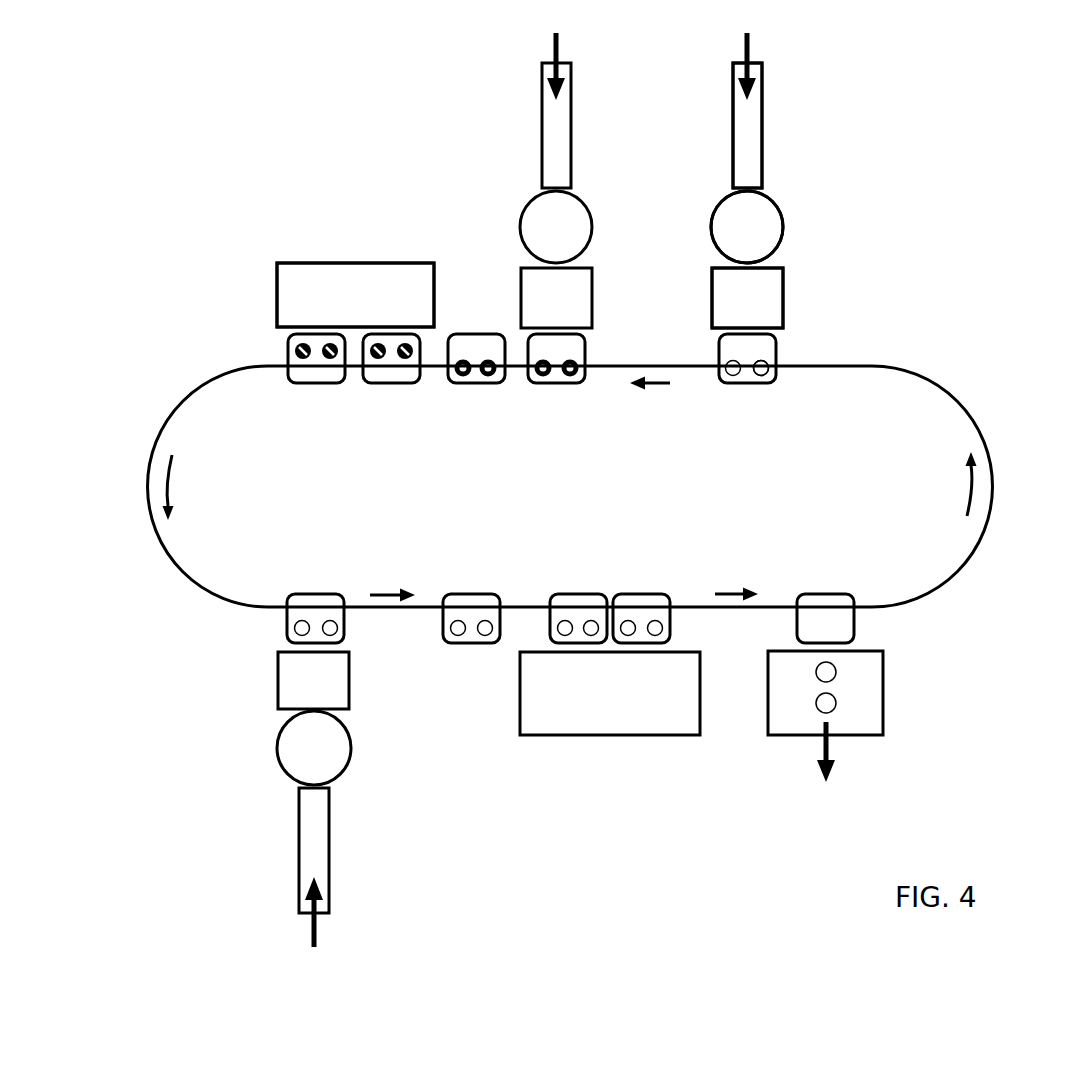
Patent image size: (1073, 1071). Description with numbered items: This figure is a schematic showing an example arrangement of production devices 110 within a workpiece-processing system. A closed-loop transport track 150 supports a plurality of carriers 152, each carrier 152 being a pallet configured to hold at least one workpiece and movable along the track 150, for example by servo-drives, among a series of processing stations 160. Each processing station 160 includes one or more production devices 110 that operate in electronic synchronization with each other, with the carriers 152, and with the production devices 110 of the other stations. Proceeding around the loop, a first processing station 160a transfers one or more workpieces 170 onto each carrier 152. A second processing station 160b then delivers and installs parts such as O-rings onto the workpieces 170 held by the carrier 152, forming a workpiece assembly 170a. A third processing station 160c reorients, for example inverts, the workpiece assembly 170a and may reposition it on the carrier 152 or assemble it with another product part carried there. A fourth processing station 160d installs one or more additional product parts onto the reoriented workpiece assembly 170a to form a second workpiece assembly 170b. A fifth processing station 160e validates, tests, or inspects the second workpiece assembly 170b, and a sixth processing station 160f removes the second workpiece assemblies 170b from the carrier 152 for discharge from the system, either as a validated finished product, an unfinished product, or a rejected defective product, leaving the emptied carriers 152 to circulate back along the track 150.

The production device 110 is at (762, 148).
The transport track 150 is at (973, 398).
The carrier 152 is at (776, 355).
The processing station 160 is at (377, 250).
The first processing station 160a is at (805, 94).
The second processing station 160b is at (601, 99).
The third processing station 160c is at (405, 236).
The fourth processing station 160d is at (261, 858).
The fifth processing station 160e is at (521, 767).
The sixth processing station 160f is at (764, 768).
The workpiece 170 is at (761, 376).
The workpiece assembly 170a is at (570, 376).
The second workpiece assembly 170b is at (327, 622).